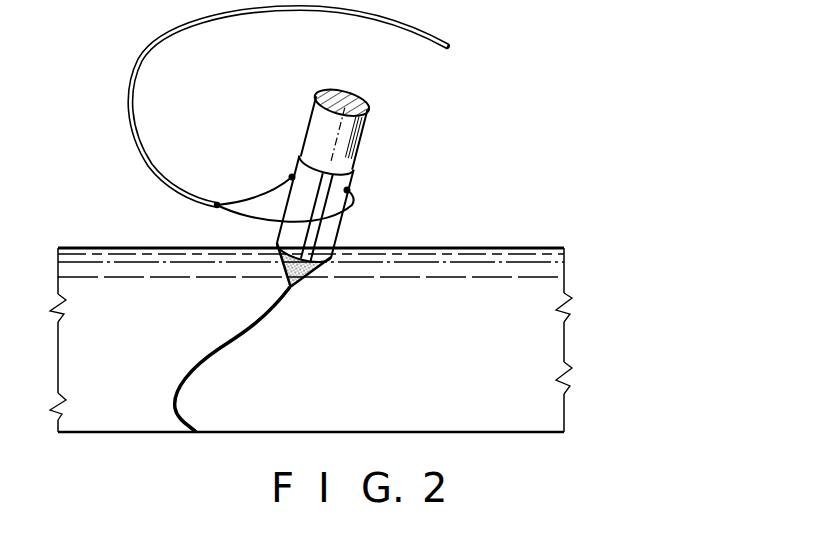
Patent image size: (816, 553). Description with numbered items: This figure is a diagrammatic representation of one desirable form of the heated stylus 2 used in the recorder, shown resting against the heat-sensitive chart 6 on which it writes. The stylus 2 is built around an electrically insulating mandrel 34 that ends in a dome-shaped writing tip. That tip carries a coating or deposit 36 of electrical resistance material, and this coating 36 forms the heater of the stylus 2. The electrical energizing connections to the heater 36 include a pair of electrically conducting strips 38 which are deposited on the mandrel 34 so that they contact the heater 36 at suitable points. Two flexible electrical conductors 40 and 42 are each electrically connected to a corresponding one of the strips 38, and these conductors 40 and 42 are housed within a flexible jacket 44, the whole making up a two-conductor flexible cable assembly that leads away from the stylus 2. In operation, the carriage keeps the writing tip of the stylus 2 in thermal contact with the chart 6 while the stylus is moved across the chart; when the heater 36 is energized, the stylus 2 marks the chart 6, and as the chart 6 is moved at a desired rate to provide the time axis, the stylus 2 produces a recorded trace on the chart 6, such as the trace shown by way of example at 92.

The heated stylus 2 is at (352, 210).
The heat-sensitive chart 6 is at (90, 249).
The electrically insulating mandrel 34 is at (350, 148).
The coating of electrical resistance material 36 is at (301, 279).
The electrically conducting strips 38 is at (303, 237).
The flexible electrical conductor 40 is at (257, 195).
The flexible electrical conductor 42 is at (255, 217).
The flexible jacket 44 is at (144, 154).
The recorded trace 92 is at (171, 400).